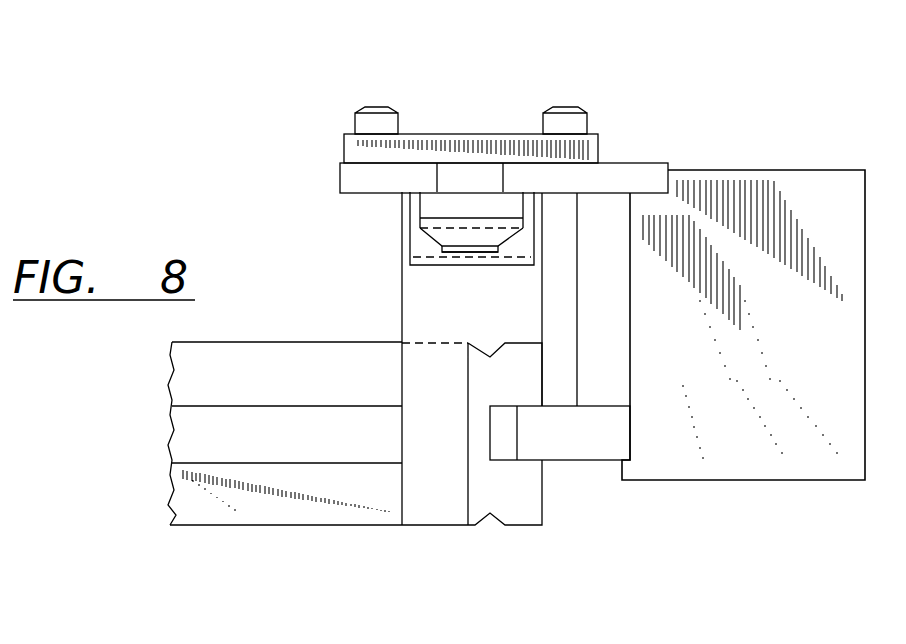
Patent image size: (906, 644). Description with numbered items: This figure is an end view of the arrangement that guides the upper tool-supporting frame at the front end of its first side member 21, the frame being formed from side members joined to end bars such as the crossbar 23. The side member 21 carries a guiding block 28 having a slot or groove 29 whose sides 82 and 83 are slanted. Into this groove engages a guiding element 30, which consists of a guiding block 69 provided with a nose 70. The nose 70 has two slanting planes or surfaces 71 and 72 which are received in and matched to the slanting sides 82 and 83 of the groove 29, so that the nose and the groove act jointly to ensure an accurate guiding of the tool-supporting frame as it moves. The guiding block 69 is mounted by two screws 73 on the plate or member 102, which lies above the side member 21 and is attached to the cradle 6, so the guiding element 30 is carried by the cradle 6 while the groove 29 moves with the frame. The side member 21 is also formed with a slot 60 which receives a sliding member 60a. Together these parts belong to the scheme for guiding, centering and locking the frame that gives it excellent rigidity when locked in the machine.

The cradle 6 is at (760, 170).
The first bar or side member 21 is at (512, 505).
The end bar or crossbar 23 is at (253, 495).
The guiding block 28 is at (430, 327).
The slot or groove 29 is at (462, 250).
The guiding element 30 is at (488, 135).
The slot or groove 60 is at (490, 435).
The sliding member 60a is at (592, 432).
The guiding block 69 is at (413, 152).
The nose 70 is at (475, 237).
The slanting plane or surface 71 is at (505, 234).
The slanting plane or surface 72 is at (440, 242).
The screw 73 is at (363, 127).
The slanting side 82 is at (503, 233).
The slanting side 83 is at (440, 243).
The plate or member 102 is at (345, 177).